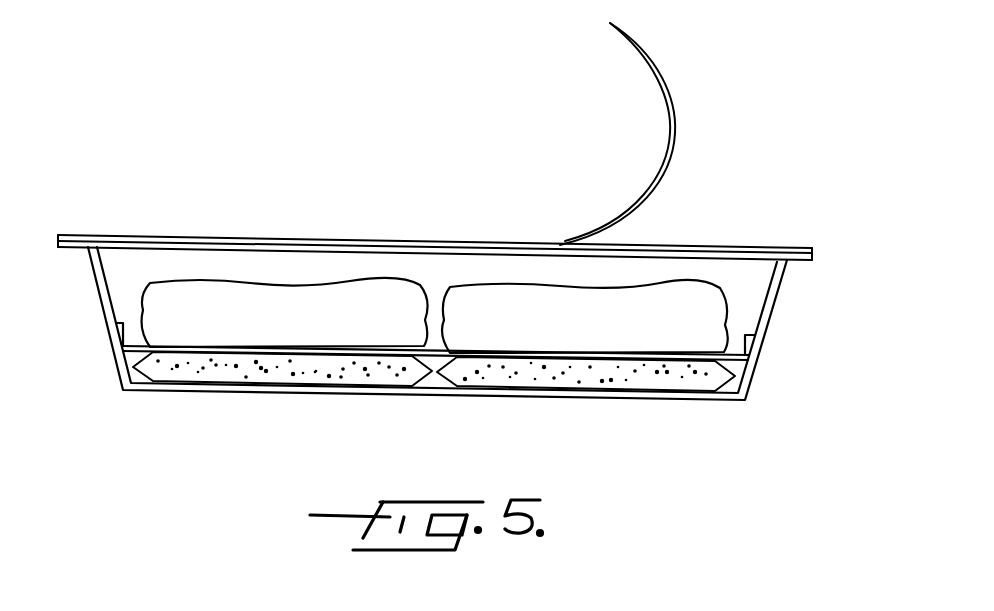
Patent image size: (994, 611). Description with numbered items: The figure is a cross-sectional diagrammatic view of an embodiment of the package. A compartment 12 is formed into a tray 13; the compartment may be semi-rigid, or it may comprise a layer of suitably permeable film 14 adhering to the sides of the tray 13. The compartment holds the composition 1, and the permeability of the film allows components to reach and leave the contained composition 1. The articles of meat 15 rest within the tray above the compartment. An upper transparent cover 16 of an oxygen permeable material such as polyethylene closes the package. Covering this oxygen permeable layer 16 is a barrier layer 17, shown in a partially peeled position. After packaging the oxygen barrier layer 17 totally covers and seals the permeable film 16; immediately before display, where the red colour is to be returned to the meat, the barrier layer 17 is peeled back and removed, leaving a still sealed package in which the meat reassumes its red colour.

The composition 1 is at (323, 378).
The compartment 12 is at (430, 376).
The tray 13 is at (175, 395).
The permeable film 14 is at (127, 340).
The articles of meat 15 is at (547, 305).
The upper transparent cover 16 is at (737, 247).
The barrier layer 17 is at (667, 82).